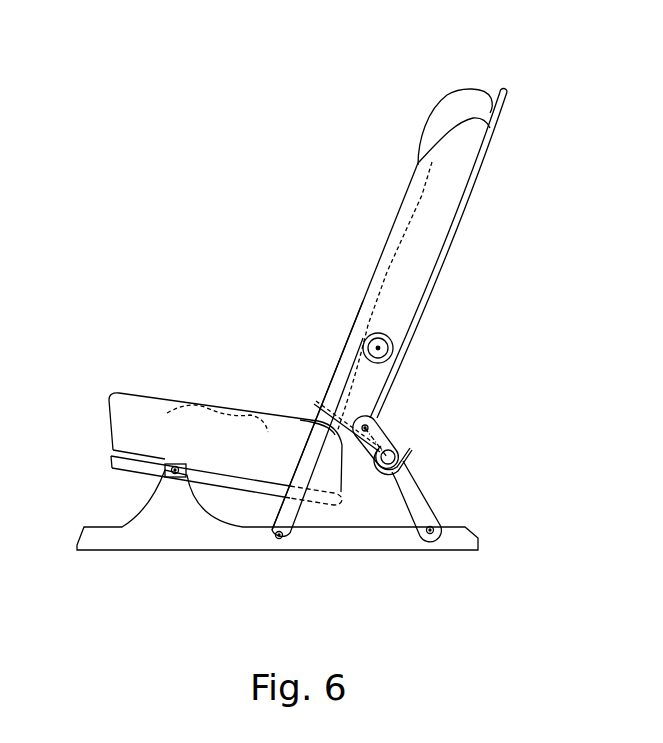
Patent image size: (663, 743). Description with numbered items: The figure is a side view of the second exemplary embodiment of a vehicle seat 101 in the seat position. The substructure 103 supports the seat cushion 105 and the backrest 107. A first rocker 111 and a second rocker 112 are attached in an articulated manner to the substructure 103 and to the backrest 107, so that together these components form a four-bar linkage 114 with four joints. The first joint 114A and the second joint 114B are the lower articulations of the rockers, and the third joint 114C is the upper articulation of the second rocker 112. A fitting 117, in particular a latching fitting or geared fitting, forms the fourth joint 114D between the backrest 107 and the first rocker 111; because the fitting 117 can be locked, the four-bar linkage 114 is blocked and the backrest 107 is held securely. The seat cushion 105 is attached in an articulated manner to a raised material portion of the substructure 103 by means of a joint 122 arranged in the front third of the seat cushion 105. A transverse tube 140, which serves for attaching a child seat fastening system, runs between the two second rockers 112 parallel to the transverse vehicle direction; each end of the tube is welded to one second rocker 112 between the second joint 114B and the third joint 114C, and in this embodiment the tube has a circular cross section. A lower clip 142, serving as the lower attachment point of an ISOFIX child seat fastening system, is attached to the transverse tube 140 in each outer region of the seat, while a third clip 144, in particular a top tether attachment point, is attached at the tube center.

The vehicle seat 101 is at (200, 306).
The substructure 103 is at (127, 537).
The seat cushion 105 is at (158, 422).
The backrest 107 is at (412, 253).
The first rocker 111 is at (317, 445).
The second rocker 112 is at (412, 507).
The four-bar linkage 114 is at (405, 461).
The first joint 114A is at (285, 537).
The second joint 114B is at (437, 533).
The third joint 114C is at (385, 410).
The fourth joint 114D is at (380, 348).
The fitting 117 is at (378, 348).
The joint 122 is at (168, 462).
The transverse tube 140 is at (402, 441).
The lower clip 142 is at (309, 397).
The third clip 144 is at (418, 445).